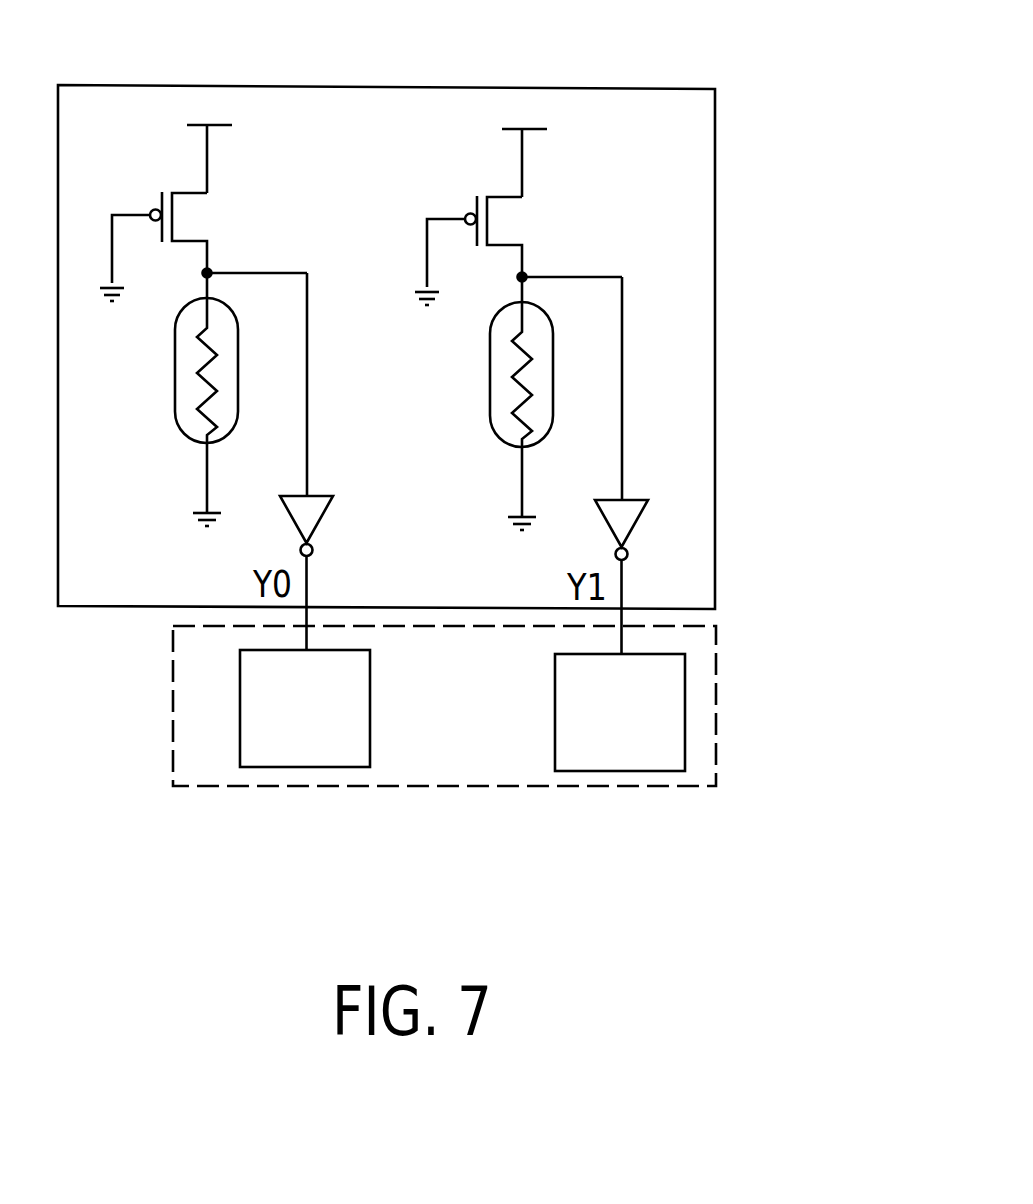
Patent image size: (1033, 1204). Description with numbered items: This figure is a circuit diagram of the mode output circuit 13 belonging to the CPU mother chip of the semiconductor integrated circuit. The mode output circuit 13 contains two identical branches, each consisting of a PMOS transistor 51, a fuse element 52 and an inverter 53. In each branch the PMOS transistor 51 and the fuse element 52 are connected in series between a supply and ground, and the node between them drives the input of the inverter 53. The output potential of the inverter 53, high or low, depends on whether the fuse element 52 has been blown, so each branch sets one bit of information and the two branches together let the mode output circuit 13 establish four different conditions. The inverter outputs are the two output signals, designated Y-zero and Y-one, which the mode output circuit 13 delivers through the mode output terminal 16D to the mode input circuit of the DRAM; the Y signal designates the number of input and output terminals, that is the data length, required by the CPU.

The mode output circuit 13 is at (210, 86).
The PMOS transistor 51 is at (200, 215).
The fuse element 52 is at (172, 372).
The inverter 53 is at (313, 493).
The mode output terminal 16D is at (717, 677).